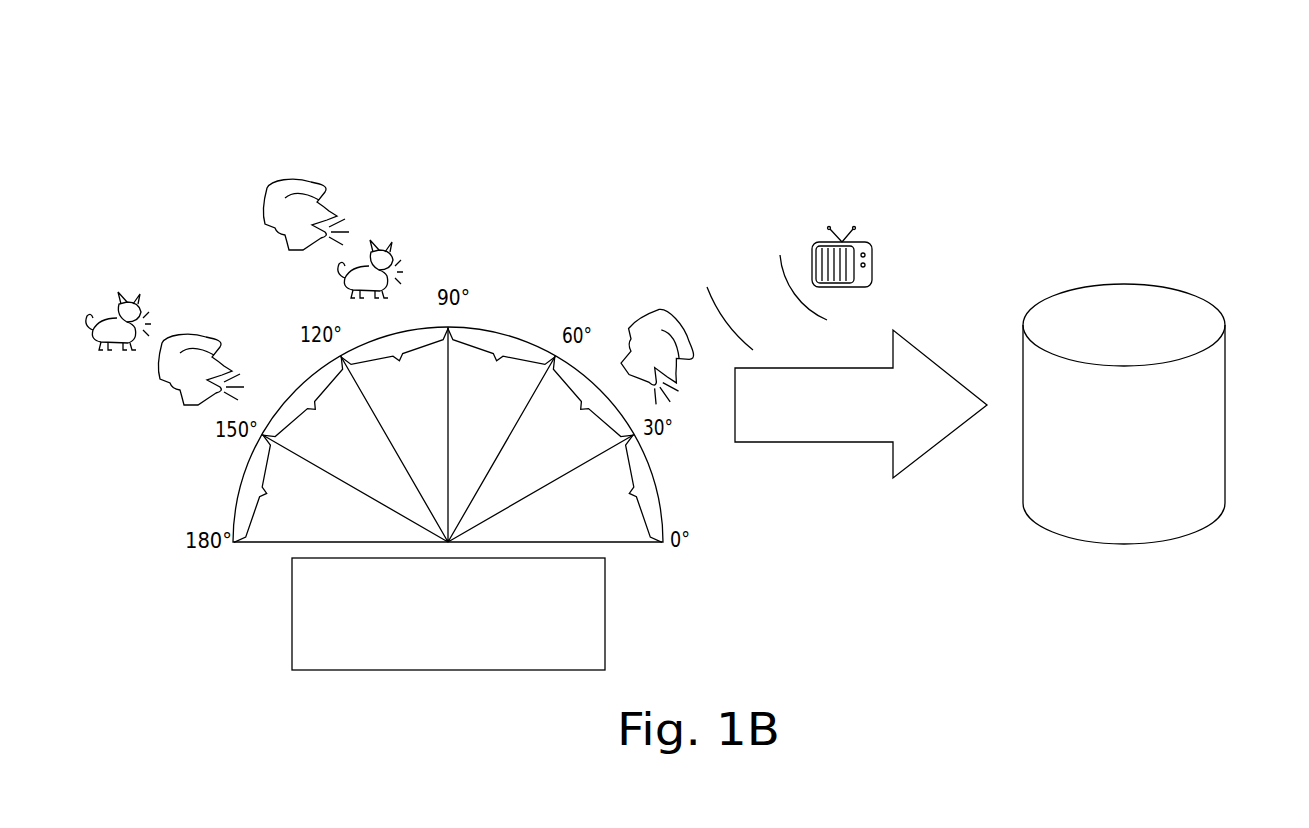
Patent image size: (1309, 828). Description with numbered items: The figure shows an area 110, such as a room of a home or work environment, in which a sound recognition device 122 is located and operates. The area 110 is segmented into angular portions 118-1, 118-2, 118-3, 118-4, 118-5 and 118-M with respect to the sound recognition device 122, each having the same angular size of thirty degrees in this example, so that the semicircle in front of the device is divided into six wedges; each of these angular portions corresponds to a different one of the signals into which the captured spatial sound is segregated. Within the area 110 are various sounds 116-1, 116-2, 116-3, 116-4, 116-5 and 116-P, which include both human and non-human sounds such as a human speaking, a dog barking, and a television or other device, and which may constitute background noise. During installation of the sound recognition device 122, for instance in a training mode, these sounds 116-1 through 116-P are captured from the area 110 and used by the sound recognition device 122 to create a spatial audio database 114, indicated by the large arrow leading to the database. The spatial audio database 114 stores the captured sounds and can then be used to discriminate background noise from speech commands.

The area 110 is at (126, 130).
The spatial audio database 114 is at (1226, 352).
The sound 116-1 is at (125, 295).
The sound 116-2 is at (195, 339).
The sound 116-3 is at (298, 184).
The sound 116-4 is at (391, 255).
The sound 116-5 is at (873, 258).
The sound 116-P is at (647, 313).
The angular portion 118-1 is at (276, 489).
The angular portion 118-2 is at (310, 397).
The angular portion 118-3 is at (395, 353).
The angular portion 118-4 is at (502, 352).
The angular portion 118-5 is at (589, 397).
The angular portion 118-M is at (617, 489).
The sound recognition device 122 is at (605, 598).